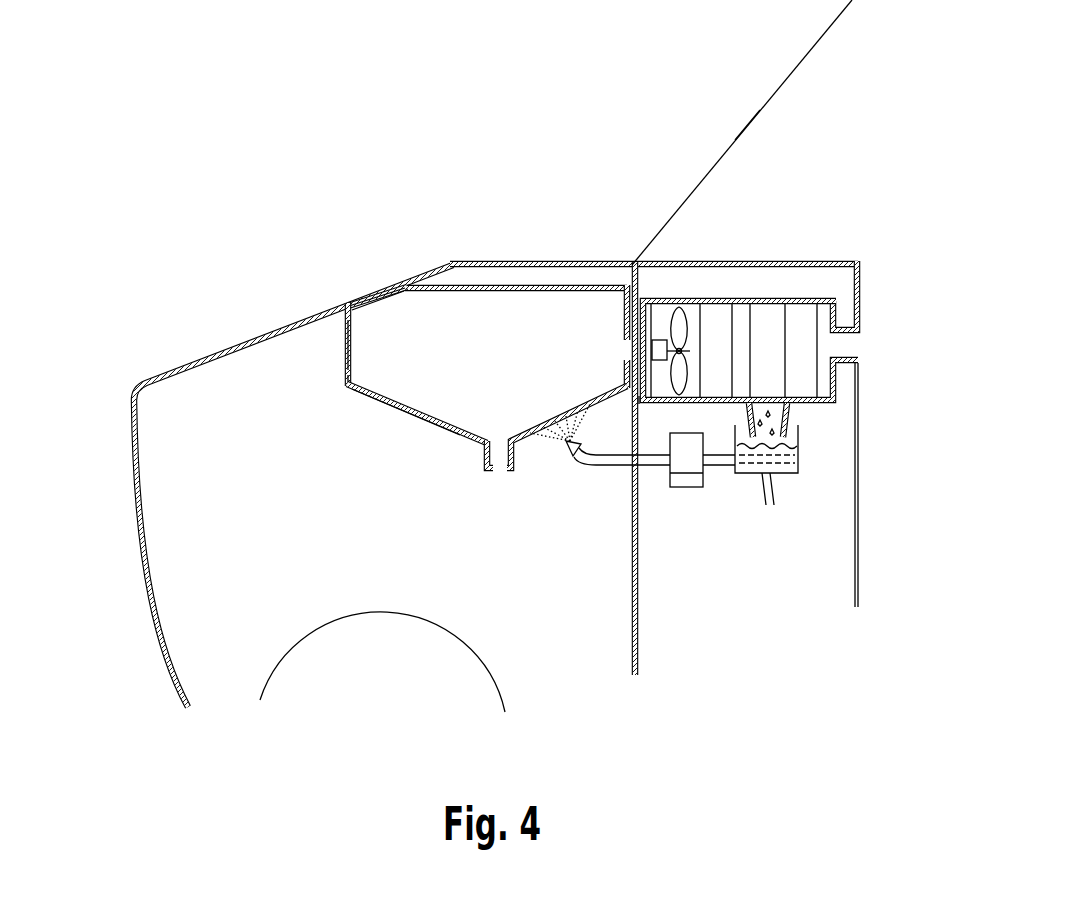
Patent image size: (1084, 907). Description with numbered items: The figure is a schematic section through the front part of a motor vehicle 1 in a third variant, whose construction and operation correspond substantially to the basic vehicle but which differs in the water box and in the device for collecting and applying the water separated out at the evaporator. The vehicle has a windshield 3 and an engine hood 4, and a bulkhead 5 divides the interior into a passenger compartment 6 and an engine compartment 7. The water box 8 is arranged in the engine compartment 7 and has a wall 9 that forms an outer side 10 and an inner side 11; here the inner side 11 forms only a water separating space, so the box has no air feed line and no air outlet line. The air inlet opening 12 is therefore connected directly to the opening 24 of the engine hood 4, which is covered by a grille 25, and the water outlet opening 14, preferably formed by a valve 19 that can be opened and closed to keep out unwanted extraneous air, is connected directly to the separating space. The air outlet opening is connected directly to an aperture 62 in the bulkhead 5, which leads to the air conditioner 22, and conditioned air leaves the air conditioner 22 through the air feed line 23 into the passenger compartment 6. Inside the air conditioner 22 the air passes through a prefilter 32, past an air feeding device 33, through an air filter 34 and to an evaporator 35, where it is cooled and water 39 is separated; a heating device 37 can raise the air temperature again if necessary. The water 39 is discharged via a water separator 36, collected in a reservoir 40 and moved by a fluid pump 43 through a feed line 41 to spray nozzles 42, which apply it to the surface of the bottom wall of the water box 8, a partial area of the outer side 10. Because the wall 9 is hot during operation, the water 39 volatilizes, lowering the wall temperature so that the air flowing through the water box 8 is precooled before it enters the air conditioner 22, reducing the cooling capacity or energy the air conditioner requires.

The motor vehicle 1 is at (152, 204).
The windshield 3 is at (770, 98).
The engine hood 4 is at (493, 262).
The bulkhead 5 is at (631, 652).
The passenger compartment 6 is at (737, 183).
The engine compartment 7 is at (200, 383).
The water box 8 is at (404, 436).
The wall 9 is at (343, 382).
The outer side 10 is at (358, 394).
The inner side 11 is at (434, 405).
The air inlet opening 12 is at (367, 297).
The water outlet opening 14 is at (511, 470).
The valve 19 is at (486, 470).
The air conditioner 22 is at (747, 292).
The air feed line 23 is at (844, 323).
The opening 24 is at (348, 302).
The grille 25 is at (385, 282).
The prefilter 32 is at (644, 400).
The air feeding device 33 is at (679, 306).
The air filter 34 is at (718, 323).
The evaporator 35 is at (765, 323).
The water separator 36 is at (788, 413).
The heating device 37 is at (802, 323).
The water 39 is at (772, 494).
The reservoir 40 is at (799, 462).
The feed line 41 is at (652, 500).
The spray nozzles 42 is at (575, 462).
The fluid pump 43 is at (686, 460).
The aperture 62 is at (641, 330).